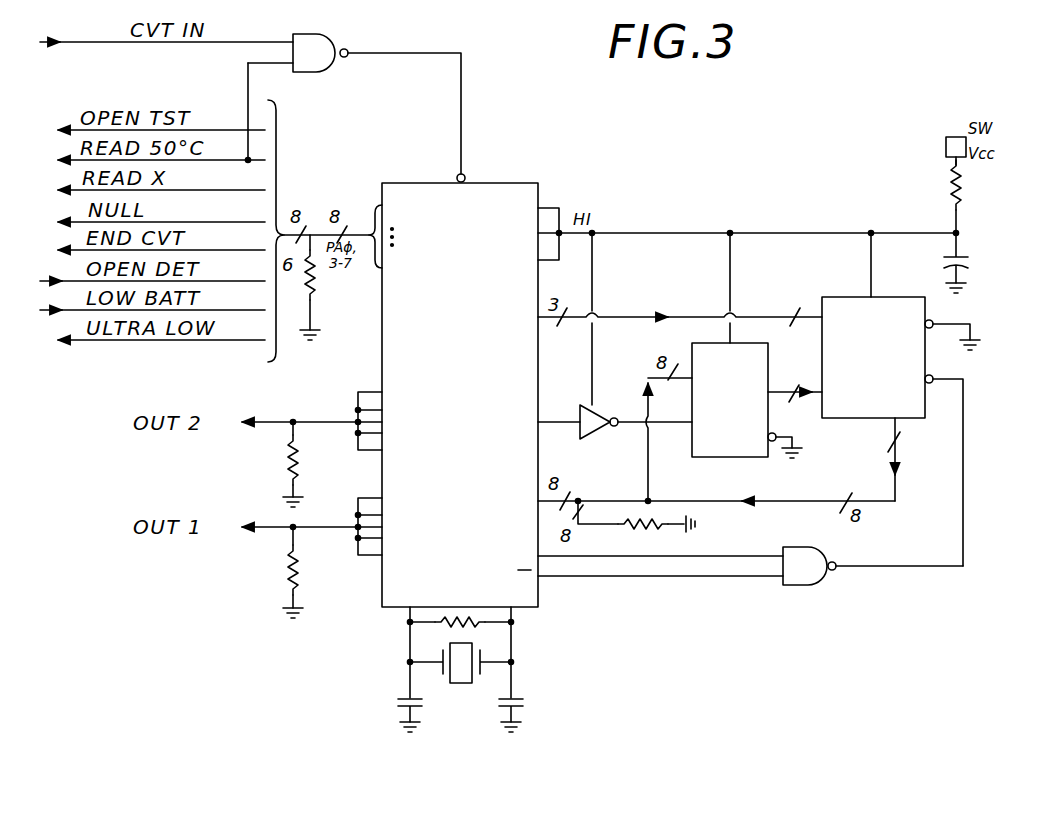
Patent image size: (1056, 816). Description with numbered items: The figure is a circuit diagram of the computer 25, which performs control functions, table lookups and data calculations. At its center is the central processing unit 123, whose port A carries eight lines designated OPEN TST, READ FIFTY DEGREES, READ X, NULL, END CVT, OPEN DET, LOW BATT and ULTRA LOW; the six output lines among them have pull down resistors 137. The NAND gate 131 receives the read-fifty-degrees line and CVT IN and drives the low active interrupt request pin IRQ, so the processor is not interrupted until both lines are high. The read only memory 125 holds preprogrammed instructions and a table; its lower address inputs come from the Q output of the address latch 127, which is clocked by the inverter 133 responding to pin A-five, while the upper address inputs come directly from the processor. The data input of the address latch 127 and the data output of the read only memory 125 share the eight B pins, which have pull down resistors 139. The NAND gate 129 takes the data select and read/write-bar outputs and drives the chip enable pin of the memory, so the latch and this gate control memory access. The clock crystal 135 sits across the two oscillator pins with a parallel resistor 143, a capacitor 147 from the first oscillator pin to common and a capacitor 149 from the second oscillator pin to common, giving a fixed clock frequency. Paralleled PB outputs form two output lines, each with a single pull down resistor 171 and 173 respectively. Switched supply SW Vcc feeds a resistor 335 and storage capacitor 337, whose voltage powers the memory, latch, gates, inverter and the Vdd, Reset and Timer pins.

The computer 25 is at (764, 627).
The central processing unit 123 is at (508, 183).
The read only memory 125 is at (905, 280).
The address latch 127 is at (770, 345).
The NAND gate 129 is at (824, 556).
The NAND gate 131 is at (331, 50).
The inverter 133 is at (590, 410).
The clock crystal 135 is at (460, 690).
The pull down resistors 137 is at (312, 295).
The pull down resistors 139 is at (626, 531).
The resistor 143 is at (470, 624).
The capacitor 147 is at (398, 706).
The capacitor 149 is at (523, 706).
The pull down resistor 171 is at (303, 463).
The pull down resistor 173 is at (303, 577).
The resistor 335 is at (972, 192).
The storage capacitor 337 is at (975, 260).